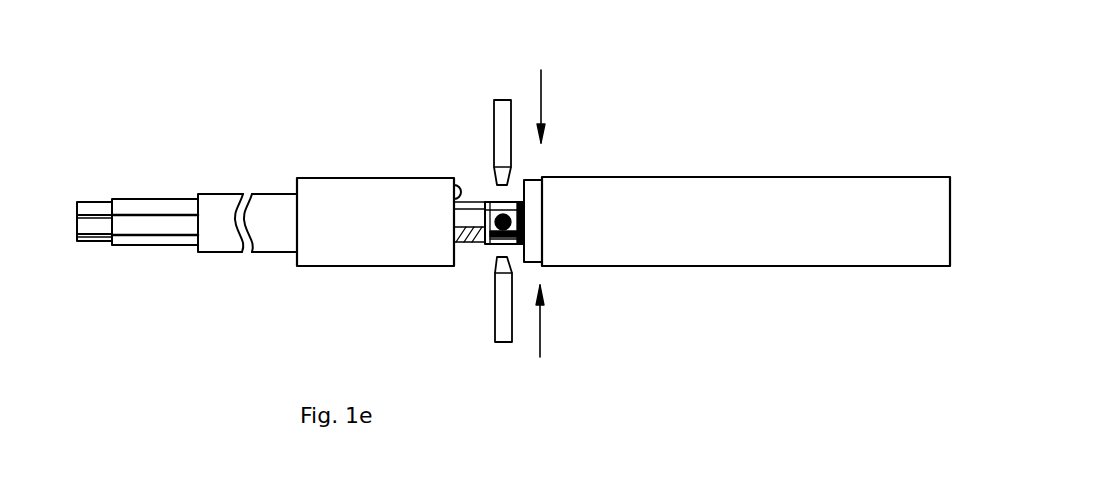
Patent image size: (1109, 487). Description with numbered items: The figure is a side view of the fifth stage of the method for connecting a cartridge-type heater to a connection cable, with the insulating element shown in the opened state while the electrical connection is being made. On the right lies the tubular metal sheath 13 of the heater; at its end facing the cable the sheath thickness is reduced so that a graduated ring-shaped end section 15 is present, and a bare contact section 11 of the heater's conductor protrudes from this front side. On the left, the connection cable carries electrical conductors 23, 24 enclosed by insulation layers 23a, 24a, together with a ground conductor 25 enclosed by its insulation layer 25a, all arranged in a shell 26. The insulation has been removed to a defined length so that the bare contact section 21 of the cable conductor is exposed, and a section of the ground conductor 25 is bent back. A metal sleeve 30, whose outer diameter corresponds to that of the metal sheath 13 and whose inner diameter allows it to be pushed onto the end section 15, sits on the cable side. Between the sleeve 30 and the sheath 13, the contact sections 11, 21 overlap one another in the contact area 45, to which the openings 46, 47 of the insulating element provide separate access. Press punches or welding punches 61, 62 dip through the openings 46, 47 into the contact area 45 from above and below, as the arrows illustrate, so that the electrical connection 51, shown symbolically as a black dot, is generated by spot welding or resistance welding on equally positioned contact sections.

The contact section 11 is at (513, 243).
The tubular metal sheath 13 is at (785, 193).
The ring-shaped end section 15 is at (532, 193).
The contact section 21 is at (490, 200).
The electrical conductor 23 is at (88, 202).
The insulation layer 23a is at (172, 227).
The electrical conductor 24 is at (107, 238).
The insulation layer 24a is at (158, 240).
The ground conductor 25 is at (92, 208).
The insulation layer 25a is at (150, 208).
The shell 26 is at (267, 207).
The sleeve 30 is at (325, 203).
The contact area 45 is at (500, 243).
The opening 46 is at (509, 197).
The opening 47 is at (497, 243).
The electrical connection 51 is at (485, 243).
The press punch or welding punch 61 is at (503, 315).
The press punch or welding punch 62 is at (501, 128).